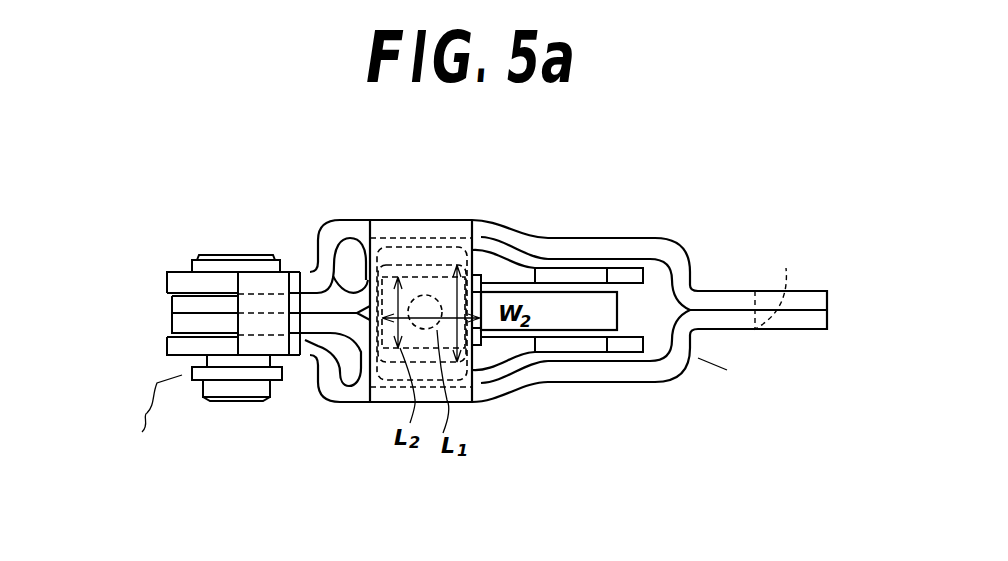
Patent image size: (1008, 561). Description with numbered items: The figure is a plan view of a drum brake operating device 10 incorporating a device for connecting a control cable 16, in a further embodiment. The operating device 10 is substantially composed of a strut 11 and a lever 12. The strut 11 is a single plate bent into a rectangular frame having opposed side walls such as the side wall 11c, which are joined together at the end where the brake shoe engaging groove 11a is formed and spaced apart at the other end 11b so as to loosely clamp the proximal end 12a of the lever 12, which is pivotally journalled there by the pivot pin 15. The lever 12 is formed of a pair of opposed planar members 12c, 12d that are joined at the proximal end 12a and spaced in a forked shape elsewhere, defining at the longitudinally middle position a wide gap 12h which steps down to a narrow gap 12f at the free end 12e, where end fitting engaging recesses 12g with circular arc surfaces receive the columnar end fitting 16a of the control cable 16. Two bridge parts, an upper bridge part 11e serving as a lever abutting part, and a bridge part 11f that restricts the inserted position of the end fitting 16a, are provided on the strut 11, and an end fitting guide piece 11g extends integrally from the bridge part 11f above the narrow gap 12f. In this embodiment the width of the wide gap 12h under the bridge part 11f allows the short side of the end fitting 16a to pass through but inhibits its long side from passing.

The drum brake operating device 10 is at (182, 375).
The strut 11 is at (712, 372).
The brake shoe engaging groove 11a is at (800, 273).
The other end of the strut 11b is at (173, 283).
The side wall 11c is at (680, 268).
The upper bridge part 11e is at (279, 282).
The bridge part 11f is at (352, 265).
The end fitting guide piece 11g is at (565, 326).
The lever 12 is at (343, 369).
The proximal end of the lever 12a is at (177, 328).
The planar member 12c is at (507, 267).
The planar member 12d is at (503, 358).
The free end of the lever 12e is at (640, 354).
The narrow gap 12f is at (613, 268).
The end fitting engaging recess 12g is at (630, 313).
The wide gap 12h is at (491, 280).
The pivot pin 15 is at (238, 399).
The control cable 16 is at (421, 278).
The end fitting 16a is at (432, 265).